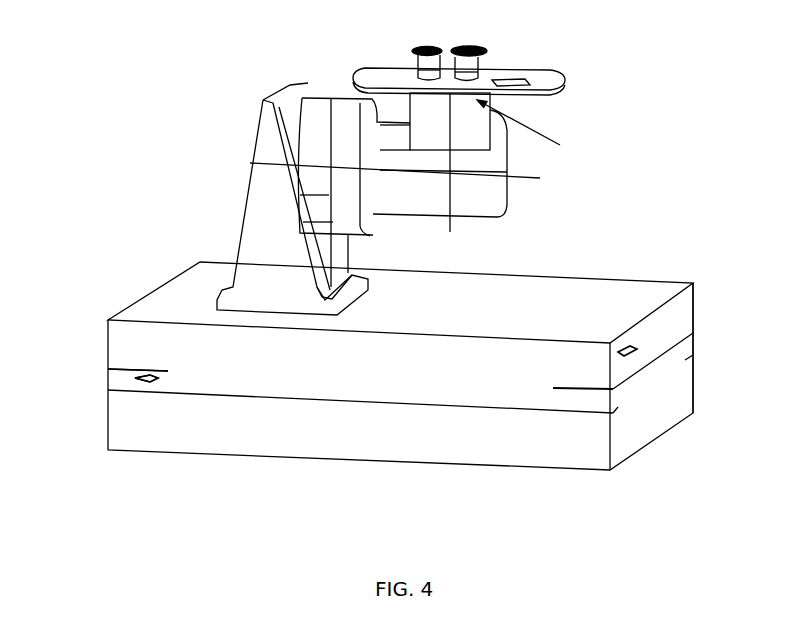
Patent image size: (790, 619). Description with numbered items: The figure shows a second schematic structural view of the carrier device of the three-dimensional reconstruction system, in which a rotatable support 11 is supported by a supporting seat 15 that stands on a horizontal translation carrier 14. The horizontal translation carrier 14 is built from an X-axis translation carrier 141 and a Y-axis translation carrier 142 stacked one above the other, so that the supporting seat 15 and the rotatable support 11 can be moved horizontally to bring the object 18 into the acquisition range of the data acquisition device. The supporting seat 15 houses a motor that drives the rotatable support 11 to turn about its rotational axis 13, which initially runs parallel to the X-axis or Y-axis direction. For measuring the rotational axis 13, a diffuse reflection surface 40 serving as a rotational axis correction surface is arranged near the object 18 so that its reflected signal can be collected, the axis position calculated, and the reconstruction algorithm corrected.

The rotatable support 11 is at (337, 115).
The rotational axis 13 is at (552, 181).
The horizontal translation carrier 14 is at (480, 470).
The supporting seat 15 is at (240, 223).
The object 18 is at (489, 34).
The diffuse reflection surface 40 is at (522, 72).
The X-axis translation carrier 141 is at (687, 292).
The Y-axis translation carrier 142 is at (106, 372).